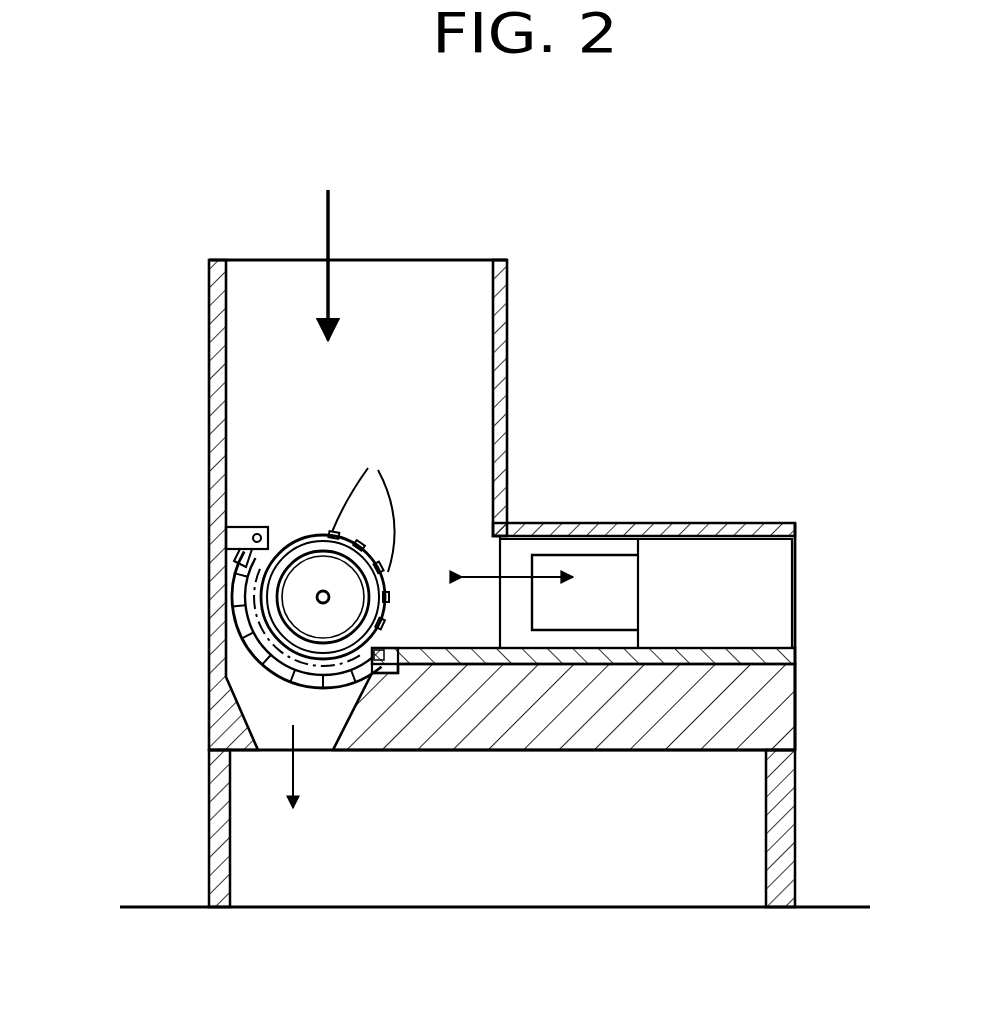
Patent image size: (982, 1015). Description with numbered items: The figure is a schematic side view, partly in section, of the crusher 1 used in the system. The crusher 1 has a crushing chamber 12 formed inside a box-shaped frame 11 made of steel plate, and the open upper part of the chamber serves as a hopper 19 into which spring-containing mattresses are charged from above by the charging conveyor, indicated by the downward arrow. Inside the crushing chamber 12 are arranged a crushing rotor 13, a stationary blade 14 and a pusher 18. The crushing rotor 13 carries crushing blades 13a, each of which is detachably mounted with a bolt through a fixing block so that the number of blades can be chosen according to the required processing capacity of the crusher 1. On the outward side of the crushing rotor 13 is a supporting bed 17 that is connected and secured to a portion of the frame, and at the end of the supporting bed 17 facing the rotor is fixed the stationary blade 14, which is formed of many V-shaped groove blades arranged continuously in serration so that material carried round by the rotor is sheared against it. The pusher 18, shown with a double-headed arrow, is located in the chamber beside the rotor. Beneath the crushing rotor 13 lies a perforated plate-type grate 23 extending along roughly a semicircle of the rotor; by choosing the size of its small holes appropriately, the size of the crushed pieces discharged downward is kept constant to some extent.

The crusher 1 is at (186, 285).
The box-shaped frame 11 is at (211, 440).
The crushing chamber 12 is at (430, 545).
The crushing rotor 13 is at (288, 533).
The crushing blade 13a is at (372, 495).
The stationary blade 14 is at (372, 667).
The supporting bed 17 is at (507, 637).
The pusher 18 is at (598, 583).
The hopper 19 is at (467, 320).
The grate 23 is at (253, 648).